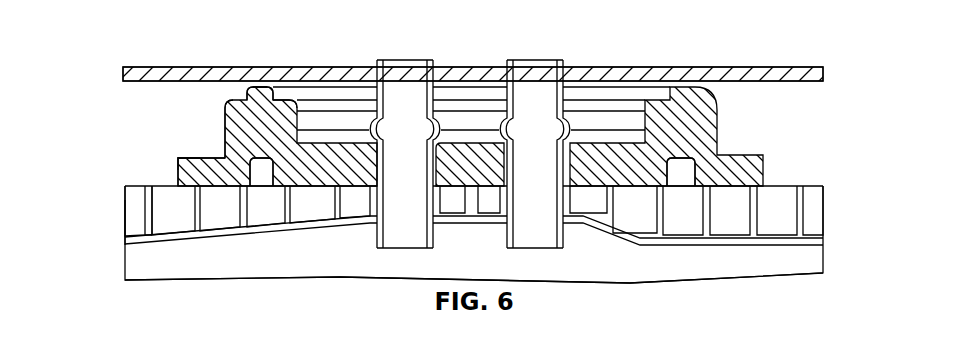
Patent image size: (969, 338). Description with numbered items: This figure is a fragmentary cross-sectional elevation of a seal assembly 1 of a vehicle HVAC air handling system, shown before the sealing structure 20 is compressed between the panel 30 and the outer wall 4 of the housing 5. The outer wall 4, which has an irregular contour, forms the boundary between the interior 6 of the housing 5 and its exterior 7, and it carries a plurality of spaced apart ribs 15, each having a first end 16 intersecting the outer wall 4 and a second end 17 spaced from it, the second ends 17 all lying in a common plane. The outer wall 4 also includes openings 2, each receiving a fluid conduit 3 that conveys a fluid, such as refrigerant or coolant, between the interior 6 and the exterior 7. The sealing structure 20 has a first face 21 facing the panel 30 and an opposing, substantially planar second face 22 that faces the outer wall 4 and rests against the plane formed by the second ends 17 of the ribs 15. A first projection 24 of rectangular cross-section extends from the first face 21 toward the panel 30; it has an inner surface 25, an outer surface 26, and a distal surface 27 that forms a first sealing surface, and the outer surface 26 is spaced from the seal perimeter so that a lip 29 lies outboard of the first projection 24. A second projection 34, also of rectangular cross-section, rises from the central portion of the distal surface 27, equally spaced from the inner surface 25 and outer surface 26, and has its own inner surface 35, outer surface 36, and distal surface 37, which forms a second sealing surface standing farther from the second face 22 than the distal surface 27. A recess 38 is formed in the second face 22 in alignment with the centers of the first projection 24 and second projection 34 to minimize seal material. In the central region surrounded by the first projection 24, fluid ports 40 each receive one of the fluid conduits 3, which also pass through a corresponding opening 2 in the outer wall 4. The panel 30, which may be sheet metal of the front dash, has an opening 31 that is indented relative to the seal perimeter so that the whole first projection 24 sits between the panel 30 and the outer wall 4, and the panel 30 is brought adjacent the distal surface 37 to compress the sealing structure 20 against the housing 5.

The seal assembly 1 is at (122, 103).
The opening 2 is at (427, 216).
The fluid conduit 3 is at (374, 218).
The outer wall 4 is at (126, 238).
The housing 5 is at (449, 260).
The interior 6 is at (226, 269).
The exterior 7 is at (330, 97).
The rib 15 is at (147, 204).
The first end 16 is at (147, 236).
The second end 17 is at (148, 186).
The sealing structure 20 is at (784, 154).
The first face 21 is at (737, 152).
The second face 22 is at (738, 187).
The first projection 24 is at (232, 138).
The inner surface 25 is at (378, 61).
The outer surface 26 is at (234, 130).
The distal surface 27 is at (236, 97).
The lip 29 is at (203, 178).
The panel 30 is at (724, 67).
The opening 31 is at (628, 68).
The second projection 34 is at (260, 98).
The inner surface 35 is at (285, 122).
The outer surface 36 is at (242, 102).
The distal surface 37 is at (268, 92).
The recess 38 is at (261, 184).
The fluid port 40 is at (492, 142).